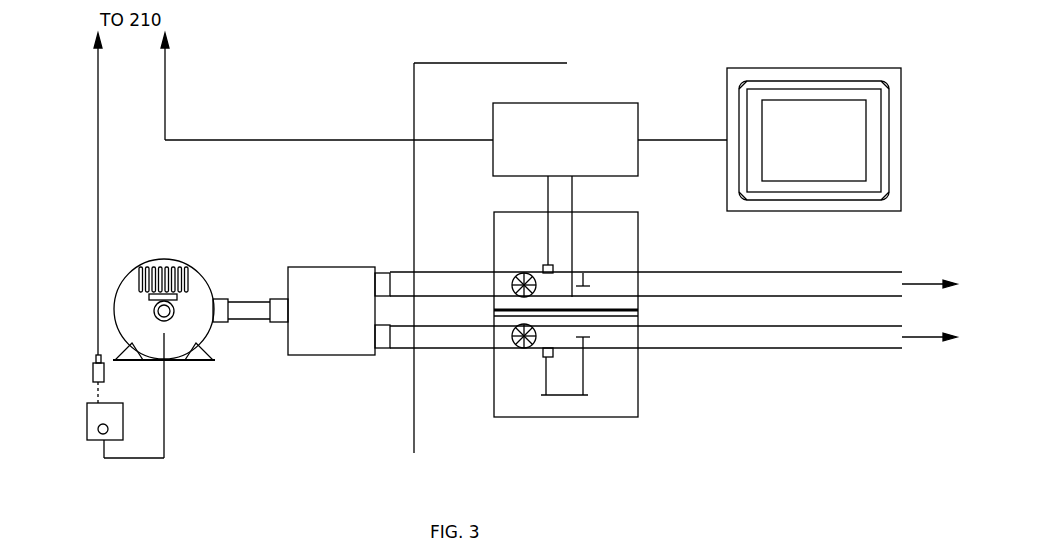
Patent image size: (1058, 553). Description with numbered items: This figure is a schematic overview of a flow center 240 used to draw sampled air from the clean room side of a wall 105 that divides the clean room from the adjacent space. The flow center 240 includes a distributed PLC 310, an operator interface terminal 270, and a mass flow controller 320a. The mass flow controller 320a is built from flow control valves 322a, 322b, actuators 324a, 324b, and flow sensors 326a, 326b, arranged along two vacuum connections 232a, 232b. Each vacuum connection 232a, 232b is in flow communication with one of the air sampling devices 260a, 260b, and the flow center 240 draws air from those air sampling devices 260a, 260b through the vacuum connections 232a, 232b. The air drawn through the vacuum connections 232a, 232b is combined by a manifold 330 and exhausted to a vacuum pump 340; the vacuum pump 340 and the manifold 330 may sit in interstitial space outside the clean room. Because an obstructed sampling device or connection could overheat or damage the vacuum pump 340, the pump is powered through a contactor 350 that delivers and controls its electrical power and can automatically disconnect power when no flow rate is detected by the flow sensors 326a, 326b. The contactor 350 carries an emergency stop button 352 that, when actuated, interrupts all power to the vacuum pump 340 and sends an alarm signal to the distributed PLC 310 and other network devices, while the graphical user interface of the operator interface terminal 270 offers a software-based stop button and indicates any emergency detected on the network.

The wall 105 is at (463, 33).
The distributed PLC 310 is at (610, 103).
The operator interface terminal 270 is at (737, 68).
The mass flow controller 320a is at (622, 417).
The flow control valve 322a is at (512, 284).
The flow control valve 322b is at (512, 341).
The actuator 324a is at (543, 266).
The actuator 324b is at (543, 356).
The flow sensor 326a is at (585, 280).
The flow sensor 326b is at (590, 340).
The vacuum connection 232a is at (838, 250).
The vacuum connection 232b is at (787, 349).
The air sampling device 260a is at (915, 284).
The air sampling device 260b is at (928, 340).
The vacuum pump 340 is at (185, 263).
The manifold 330 is at (315, 355).
The contactor 350 is at (87, 412).
The emergency stop button 352 is at (98, 429).
The flow center 240 is at (288, 458).